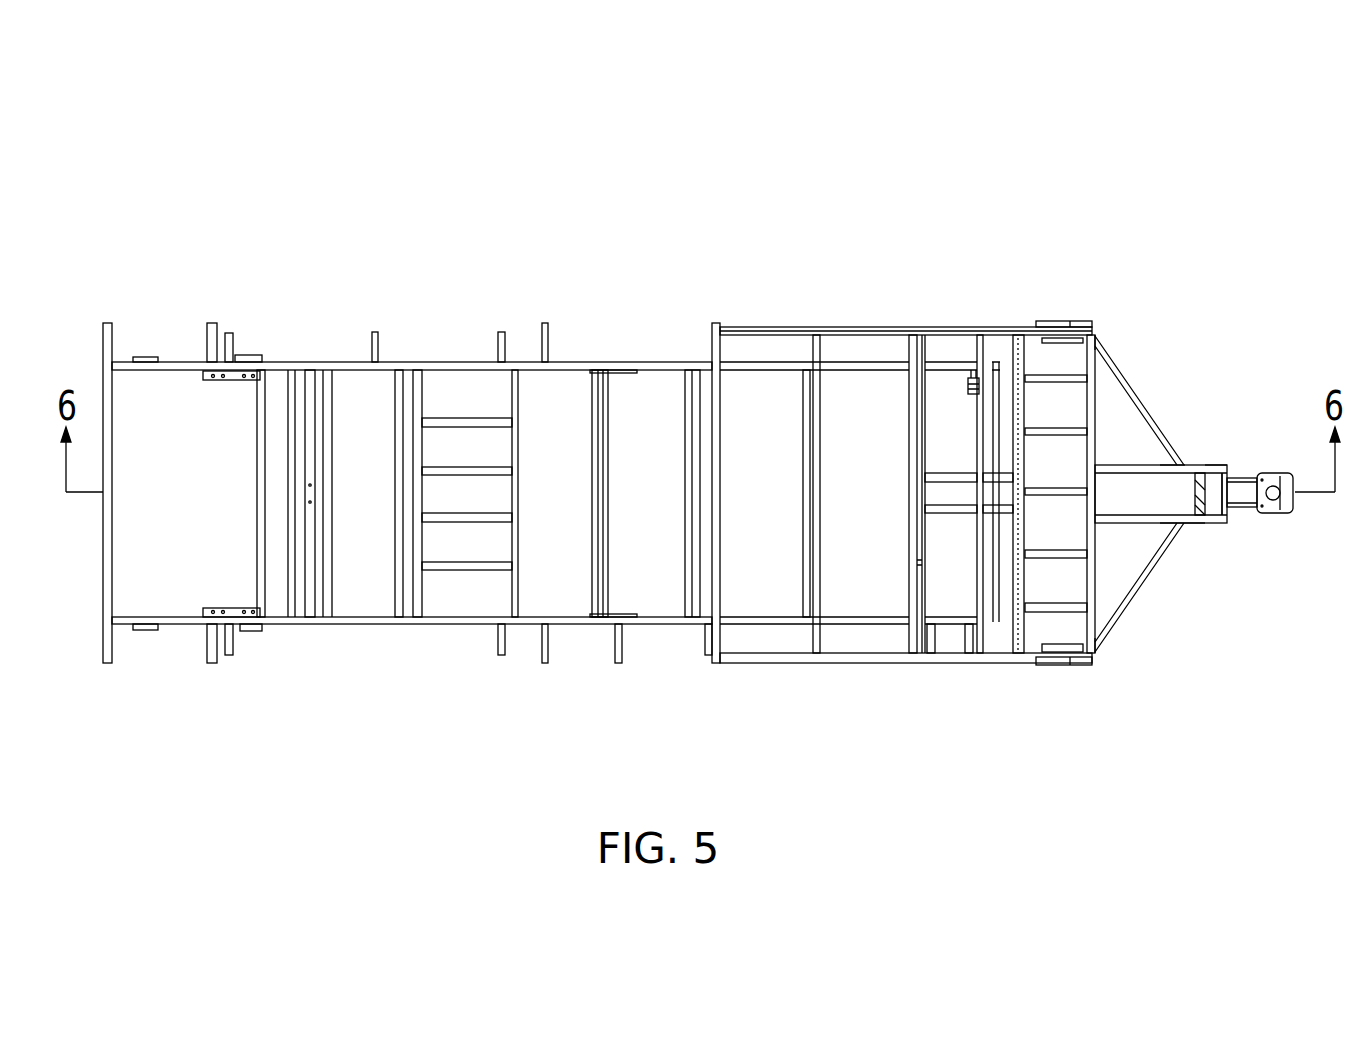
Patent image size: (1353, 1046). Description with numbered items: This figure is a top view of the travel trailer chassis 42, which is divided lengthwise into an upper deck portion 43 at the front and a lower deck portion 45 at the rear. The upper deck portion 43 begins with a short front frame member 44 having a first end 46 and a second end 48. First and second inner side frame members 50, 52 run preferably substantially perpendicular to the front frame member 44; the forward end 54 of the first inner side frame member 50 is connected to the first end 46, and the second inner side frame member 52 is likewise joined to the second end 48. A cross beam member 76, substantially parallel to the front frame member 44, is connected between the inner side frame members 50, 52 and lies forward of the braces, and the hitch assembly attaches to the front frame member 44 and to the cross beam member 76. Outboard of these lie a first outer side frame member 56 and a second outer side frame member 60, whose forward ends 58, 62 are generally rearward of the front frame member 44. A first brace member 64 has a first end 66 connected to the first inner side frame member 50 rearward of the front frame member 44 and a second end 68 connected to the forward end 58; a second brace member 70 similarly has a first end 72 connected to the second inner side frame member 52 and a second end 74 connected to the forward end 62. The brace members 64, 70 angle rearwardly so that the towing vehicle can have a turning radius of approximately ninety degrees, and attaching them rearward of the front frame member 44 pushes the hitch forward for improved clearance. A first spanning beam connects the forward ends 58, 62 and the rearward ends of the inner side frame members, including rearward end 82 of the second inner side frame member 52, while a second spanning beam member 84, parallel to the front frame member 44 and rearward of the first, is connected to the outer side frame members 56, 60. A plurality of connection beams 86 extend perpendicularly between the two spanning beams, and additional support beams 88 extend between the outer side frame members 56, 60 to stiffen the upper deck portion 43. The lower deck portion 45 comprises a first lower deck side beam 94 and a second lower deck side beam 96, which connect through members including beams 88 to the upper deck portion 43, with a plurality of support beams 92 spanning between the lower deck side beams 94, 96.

The chassis 42 is at (776, 190).
The upper deck portion 43 is at (713, 300).
The front frame member 44 is at (1228, 492).
The lower deck portion 45 is at (414, 668).
The first end 46 is at (1237, 478).
The second end 48 is at (1228, 512).
The first inner side frame member 50 is at (1197, 463).
The second inner side frame member 52 is at (1193, 525).
The forward end 54 is at (1213, 462).
The first outer side frame member 56 is at (1217, 520).
The forward end 58 is at (1060, 330).
The second outer side frame member 60 is at (787, 657).
The forward end 62 is at (1050, 652).
The first brace member 64 is at (1125, 380).
The first end 66 is at (1167, 463).
The second end 68 is at (1103, 342).
The second brace member 70 is at (1140, 587).
The first end 72 is at (1167, 525).
The second end 74 is at (1105, 645).
The cross beam member 76 is at (1207, 514).
The rearward end 82 is at (1045, 666).
The second spanning beam member 84 is at (1023, 363).
The connection beams 86 is at (1030, 610).
The support beams 88 is at (980, 630).
The support beams 92 is at (803, 577).
The first lower deck side beam 94 is at (538, 362).
The second lower deck side beam 96 is at (540, 622).